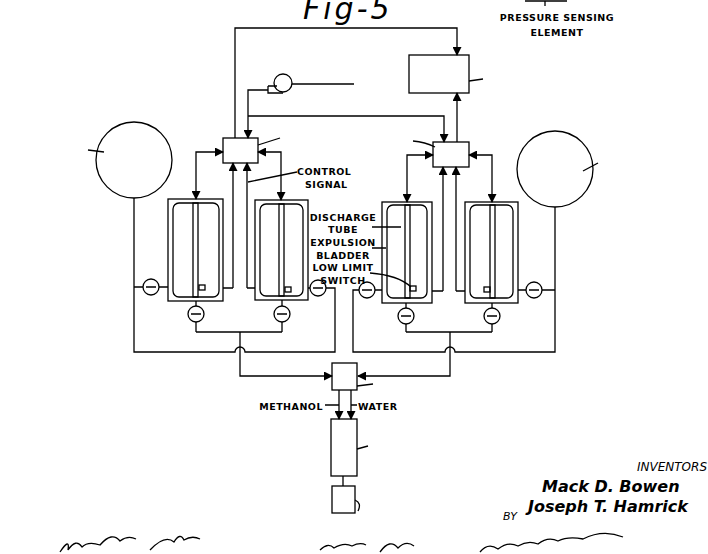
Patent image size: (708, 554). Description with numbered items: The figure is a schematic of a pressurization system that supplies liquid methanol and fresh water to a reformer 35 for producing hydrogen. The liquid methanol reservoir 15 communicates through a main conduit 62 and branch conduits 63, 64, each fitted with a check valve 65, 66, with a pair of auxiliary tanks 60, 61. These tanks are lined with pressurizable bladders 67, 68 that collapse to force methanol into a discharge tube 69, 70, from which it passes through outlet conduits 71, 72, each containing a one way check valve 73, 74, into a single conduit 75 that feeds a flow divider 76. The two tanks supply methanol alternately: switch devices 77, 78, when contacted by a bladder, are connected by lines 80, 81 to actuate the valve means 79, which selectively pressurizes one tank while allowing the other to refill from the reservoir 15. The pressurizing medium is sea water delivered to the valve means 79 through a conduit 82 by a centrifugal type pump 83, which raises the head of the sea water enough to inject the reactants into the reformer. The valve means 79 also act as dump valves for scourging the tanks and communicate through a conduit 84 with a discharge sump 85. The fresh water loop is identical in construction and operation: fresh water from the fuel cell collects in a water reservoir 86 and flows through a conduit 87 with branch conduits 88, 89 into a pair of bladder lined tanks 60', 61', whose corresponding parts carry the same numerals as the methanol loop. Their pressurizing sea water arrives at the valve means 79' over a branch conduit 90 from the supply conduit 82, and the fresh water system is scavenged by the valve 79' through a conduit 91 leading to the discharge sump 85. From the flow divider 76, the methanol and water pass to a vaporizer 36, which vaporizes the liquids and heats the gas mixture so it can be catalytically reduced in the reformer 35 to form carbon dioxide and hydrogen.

The liquid methanol reservoir 15 is at (141, 138).
The reformer 35 is at (332, 497).
The vaporizer 36 is at (331, 441).
The auxiliary tank 60 is at (182, 250).
The bladder lined tank 60' is at (412, 245).
The auxiliary tank 61 is at (298, 244).
The bladder lined tank 61' is at (504, 252).
The main conduit 62 is at (134, 244).
The branch conduit 63 is at (143, 287).
The branch conduit 64 is at (290, 318).
The check valve 65 is at (152, 296).
The check valve 66 is at (320, 297).
The pressurizable bladder 67 is at (217, 190).
The pressurizable bladder 68 is at (288, 201).
The discharge tube 69 is at (192, 216).
The discharge tube 70 is at (284, 229).
The outlet conduit 71 is at (203, 309).
The outlet conduit 72 is at (270, 330).
The one way check valve 73 is at (190, 321).
The one way check valve 74 is at (297, 343).
The single conduit 75 is at (240, 366).
The flow divider 76 is at (333, 367).
The switch device 77 is at (204, 285).
The switch device 78 is at (288, 288).
The valve means 79 is at (303, 141).
The valve means 79' is at (455, 149).
The line 80 is at (232, 178).
The line 81 is at (248, 205).
The conduit 82 is at (249, 104).
The centrifugal type pump 83 is at (289, 92).
The conduit 84 is at (235, 49).
The discharge sump 85 is at (443, 56).
The water reservoir 86 is at (557, 132).
The conduit 87 is at (397, 361).
The branch conduit 88 is at (371, 298).
The branch conduit 89 is at (531, 282).
The branch conduit 90 is at (416, 118).
The conduit 91 is at (458, 128).